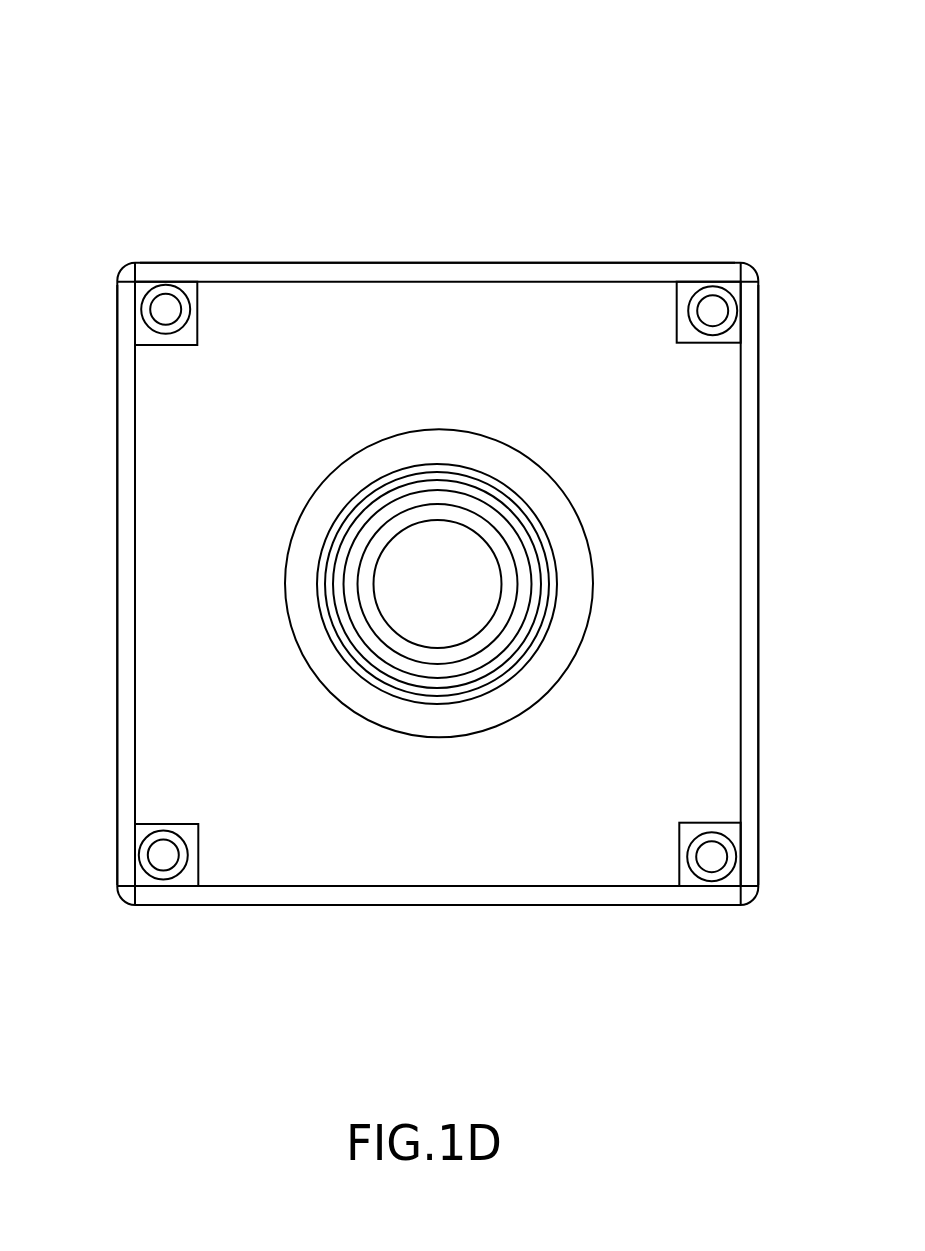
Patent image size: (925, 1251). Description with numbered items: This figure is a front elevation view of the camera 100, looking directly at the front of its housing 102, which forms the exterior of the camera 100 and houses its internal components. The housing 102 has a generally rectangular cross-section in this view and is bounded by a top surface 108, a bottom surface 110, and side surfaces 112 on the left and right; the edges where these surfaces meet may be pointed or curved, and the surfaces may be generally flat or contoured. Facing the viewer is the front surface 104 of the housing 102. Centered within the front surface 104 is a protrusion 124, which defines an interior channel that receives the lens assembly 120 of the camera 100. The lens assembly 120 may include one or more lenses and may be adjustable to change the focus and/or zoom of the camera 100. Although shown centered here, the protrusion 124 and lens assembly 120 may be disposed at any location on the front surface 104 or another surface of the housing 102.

The camera 100 is at (188, 90).
The housing 102 is at (532, 953).
The front surface 104 is at (143, 642).
The top surface 108 is at (525, 263).
The bottom surface 110 is at (268, 905).
The side surfaces 112 is at (118, 452).
The lens assembly 120 is at (480, 570).
The protrusion 124 is at (432, 435).